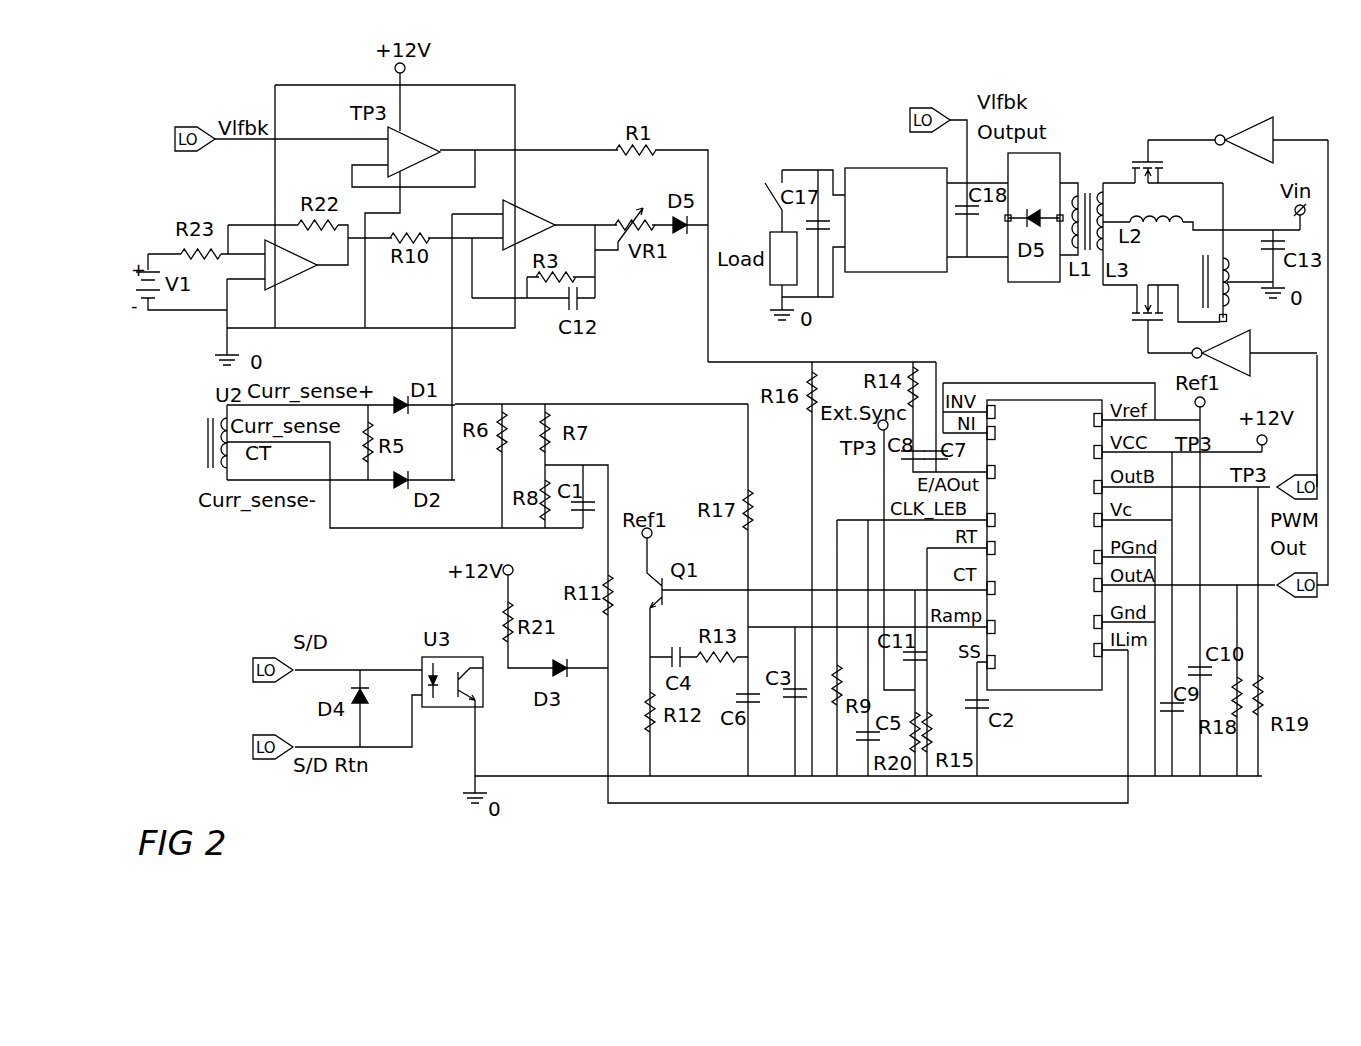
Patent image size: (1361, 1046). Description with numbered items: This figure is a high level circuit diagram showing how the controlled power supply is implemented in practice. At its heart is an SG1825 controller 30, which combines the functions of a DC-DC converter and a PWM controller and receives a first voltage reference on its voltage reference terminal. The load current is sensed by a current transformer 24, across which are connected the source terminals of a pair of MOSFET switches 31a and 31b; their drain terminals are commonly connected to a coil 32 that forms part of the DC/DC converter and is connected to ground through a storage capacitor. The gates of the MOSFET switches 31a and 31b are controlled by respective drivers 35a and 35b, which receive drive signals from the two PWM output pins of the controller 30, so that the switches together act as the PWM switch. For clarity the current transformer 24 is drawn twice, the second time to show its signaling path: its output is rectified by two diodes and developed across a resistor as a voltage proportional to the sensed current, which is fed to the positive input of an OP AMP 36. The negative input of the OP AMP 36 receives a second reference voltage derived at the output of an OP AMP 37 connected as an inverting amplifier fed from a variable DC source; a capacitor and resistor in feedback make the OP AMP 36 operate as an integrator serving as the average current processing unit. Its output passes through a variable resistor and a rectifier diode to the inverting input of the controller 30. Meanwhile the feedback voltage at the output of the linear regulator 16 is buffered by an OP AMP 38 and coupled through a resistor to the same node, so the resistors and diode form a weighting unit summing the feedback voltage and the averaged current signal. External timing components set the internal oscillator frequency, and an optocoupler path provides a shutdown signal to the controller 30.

The linear regulator 16 is at (875, 168).
The current transformer 24 is at (208, 418).
The SG1825 controller 30 is at (1043, 383).
The MOSFET switch 31a is at (1132, 160).
The MOSFET switch 31b is at (1146, 322).
The coil 32 is at (1155, 218).
The driver 35a is at (1250, 117).
The driver 35b is at (1252, 345).
The OP AMP 36 is at (527, 205).
The OP AMP 37 is at (292, 283).
The OP AMP 38 is at (415, 128).